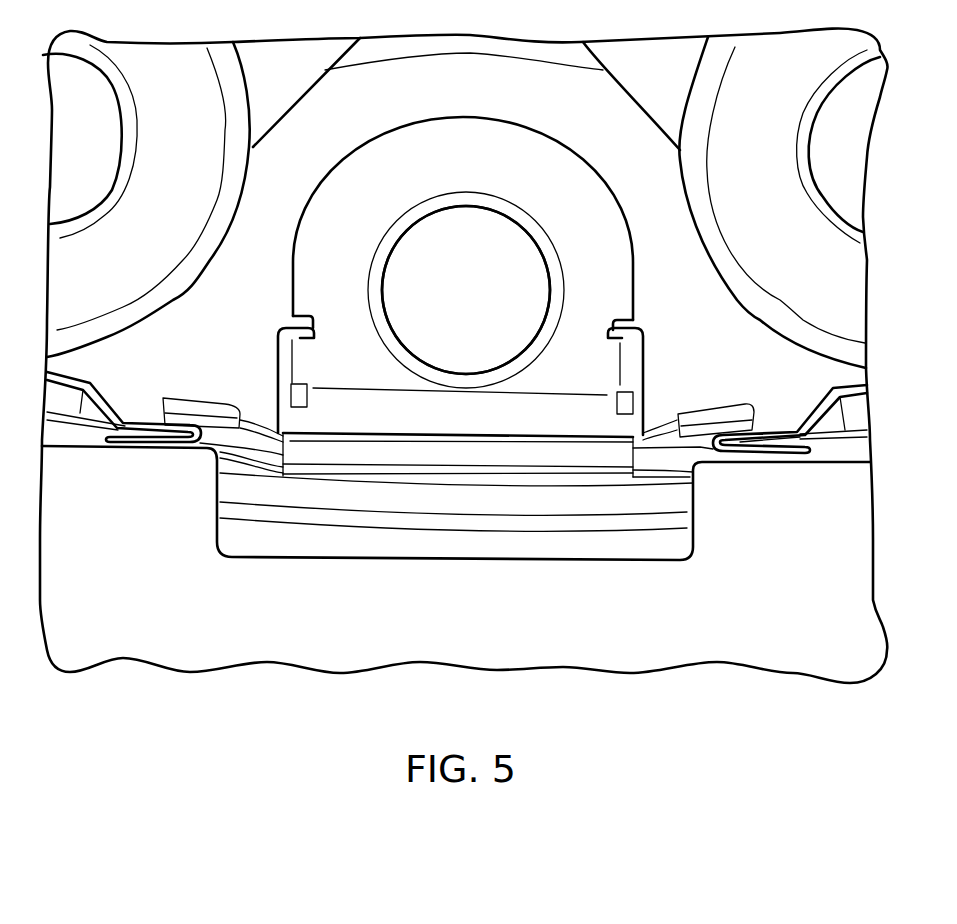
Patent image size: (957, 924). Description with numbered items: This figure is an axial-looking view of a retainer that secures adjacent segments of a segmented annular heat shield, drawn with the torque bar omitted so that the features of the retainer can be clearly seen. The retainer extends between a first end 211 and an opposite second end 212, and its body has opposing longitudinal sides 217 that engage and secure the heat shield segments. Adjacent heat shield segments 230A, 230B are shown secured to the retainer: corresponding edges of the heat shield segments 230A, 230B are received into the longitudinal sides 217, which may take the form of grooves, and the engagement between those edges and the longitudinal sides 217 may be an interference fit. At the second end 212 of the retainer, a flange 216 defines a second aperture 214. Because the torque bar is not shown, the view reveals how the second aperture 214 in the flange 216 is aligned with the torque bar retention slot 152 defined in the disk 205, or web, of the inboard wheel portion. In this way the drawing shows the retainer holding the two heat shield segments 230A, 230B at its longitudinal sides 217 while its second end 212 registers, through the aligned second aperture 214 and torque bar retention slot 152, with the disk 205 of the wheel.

The disk 205 is at (350, 143).
The flange 216 is at (486, 167).
The second aperture 214 is at (500, 250).
The torque bar retention slot 152 is at (505, 248).
The second end 212 is at (603, 360).
The first end 211 is at (430, 473).
The heat shield segment 230A is at (106, 360).
The heat shield segment 230B is at (797, 378).
The longitudinal sides 217 is at (147, 406).